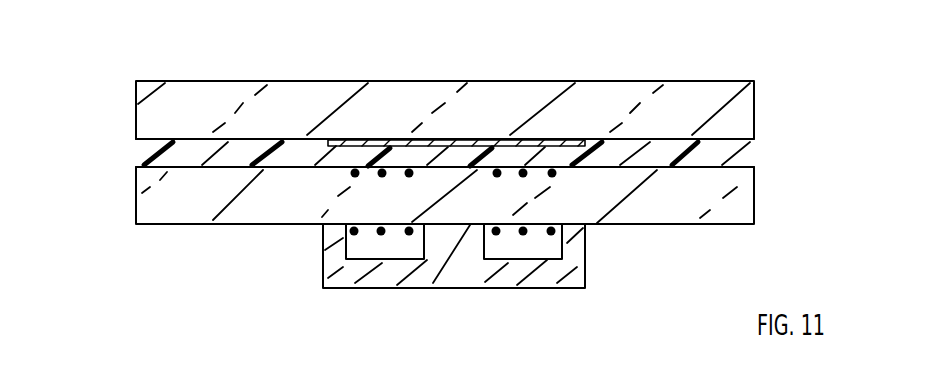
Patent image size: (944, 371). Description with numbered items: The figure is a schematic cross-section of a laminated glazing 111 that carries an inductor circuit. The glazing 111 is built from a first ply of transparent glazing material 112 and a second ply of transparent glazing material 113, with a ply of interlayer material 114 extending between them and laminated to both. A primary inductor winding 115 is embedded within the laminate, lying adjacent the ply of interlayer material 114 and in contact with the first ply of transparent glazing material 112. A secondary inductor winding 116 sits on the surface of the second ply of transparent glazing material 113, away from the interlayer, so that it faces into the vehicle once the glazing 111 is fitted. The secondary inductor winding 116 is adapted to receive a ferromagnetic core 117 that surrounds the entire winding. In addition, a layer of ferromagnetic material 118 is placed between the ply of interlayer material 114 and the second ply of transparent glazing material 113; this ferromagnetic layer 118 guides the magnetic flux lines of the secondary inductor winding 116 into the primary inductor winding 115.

The glazing 111 is at (788, 96).
The first ply of transparent glazing material 112 is at (715, 92).
The second ply of transparent glazing material 113 is at (746, 218).
The ply of interlayer material 114 is at (138, 159).
The primary inductor winding 115 is at (347, 172).
The secondary inductor winding 116 is at (556, 228).
The ferromagnetic core 117 is at (474, 278).
The layer of ferromagnetic material 118 is at (462, 137).